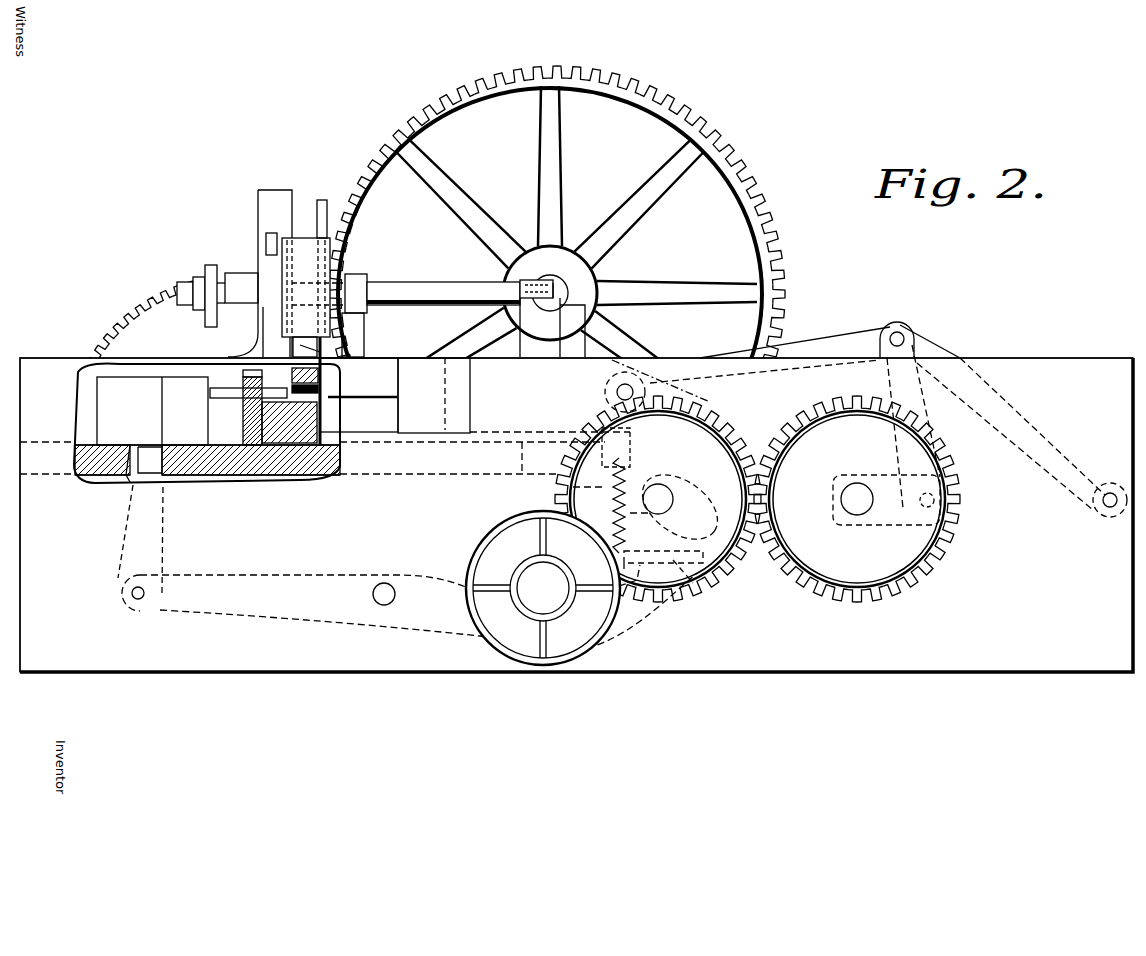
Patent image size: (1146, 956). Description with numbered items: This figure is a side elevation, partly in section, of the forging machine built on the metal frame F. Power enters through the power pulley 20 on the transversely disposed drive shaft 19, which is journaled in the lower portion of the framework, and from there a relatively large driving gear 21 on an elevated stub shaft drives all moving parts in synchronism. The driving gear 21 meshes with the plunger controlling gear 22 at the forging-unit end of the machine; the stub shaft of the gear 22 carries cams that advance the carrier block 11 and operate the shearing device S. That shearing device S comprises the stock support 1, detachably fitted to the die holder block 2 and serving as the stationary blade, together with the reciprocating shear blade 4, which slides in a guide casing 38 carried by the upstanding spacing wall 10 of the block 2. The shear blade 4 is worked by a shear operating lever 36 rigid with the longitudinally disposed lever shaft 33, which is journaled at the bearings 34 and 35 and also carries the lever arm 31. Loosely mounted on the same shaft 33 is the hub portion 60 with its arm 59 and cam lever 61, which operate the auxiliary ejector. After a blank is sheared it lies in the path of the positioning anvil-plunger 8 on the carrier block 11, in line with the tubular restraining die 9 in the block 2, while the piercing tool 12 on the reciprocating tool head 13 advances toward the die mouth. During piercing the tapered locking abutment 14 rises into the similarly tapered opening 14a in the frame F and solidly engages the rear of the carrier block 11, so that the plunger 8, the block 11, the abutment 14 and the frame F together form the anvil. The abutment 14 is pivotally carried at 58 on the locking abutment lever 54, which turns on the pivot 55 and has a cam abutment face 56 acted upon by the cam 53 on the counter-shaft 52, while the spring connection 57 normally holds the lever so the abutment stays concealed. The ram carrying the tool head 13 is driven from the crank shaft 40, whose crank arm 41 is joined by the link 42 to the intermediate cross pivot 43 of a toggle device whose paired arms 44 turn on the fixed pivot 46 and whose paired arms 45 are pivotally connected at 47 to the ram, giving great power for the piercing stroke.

The driving gear 21 is at (605, 78).
The plunger controlling gear 22 is at (130, 330).
The lever arm 31 is at (211, 268).
The bearing 34 is at (241, 306).
The shearing device S is at (243, 260).
The shear blade 4 is at (262, 222).
The shear operating lever 36 is at (270, 233).
The guide casing 38 is at (321, 245).
The hub portion 60 is at (362, 280).
The arm 59 is at (345, 230).
The lever shaft 33 is at (444, 284).
The cam lever 61 is at (364, 330).
The spacing wall 10 is at (325, 352).
The bearing 35 is at (552, 318).
The frame F is at (300, 470).
The carrier block 11 is at (178, 415).
The locking abutment 14 is at (162, 483).
The tapered opening 14a is at (128, 483).
The positioning anvil-plunger 8 is at (228, 398).
The stock support 1 is at (243, 383).
The die holder block 2 is at (310, 425).
The restraining die 9 is at (318, 383).
The piercing tool 12 is at (359, 395).
The tool head 13 is at (434, 395).
The locking abutment lever 54 is at (287, 590).
The pivot 58 is at (118, 598).
The pivot 55 is at (385, 583).
The spring connection 57 is at (555, 493).
The counter-shaft 52 is at (672, 472).
The cam 53 is at (611, 490).
The cam abutment face 56 is at (693, 583).
The power pulley 20 is at (490, 545).
The drive shaft 19 is at (543, 588).
The pivot 47 is at (615, 393).
The extensible arms 45 is at (815, 338).
The link 42 is at (913, 398).
The cross pivot 43 is at (897, 330).
The extensible arms 44 is at (948, 355).
The fixed pivot 46 is at (1107, 507).
The crank shaft 40 is at (858, 512).
The crank arm 41 is at (873, 477).